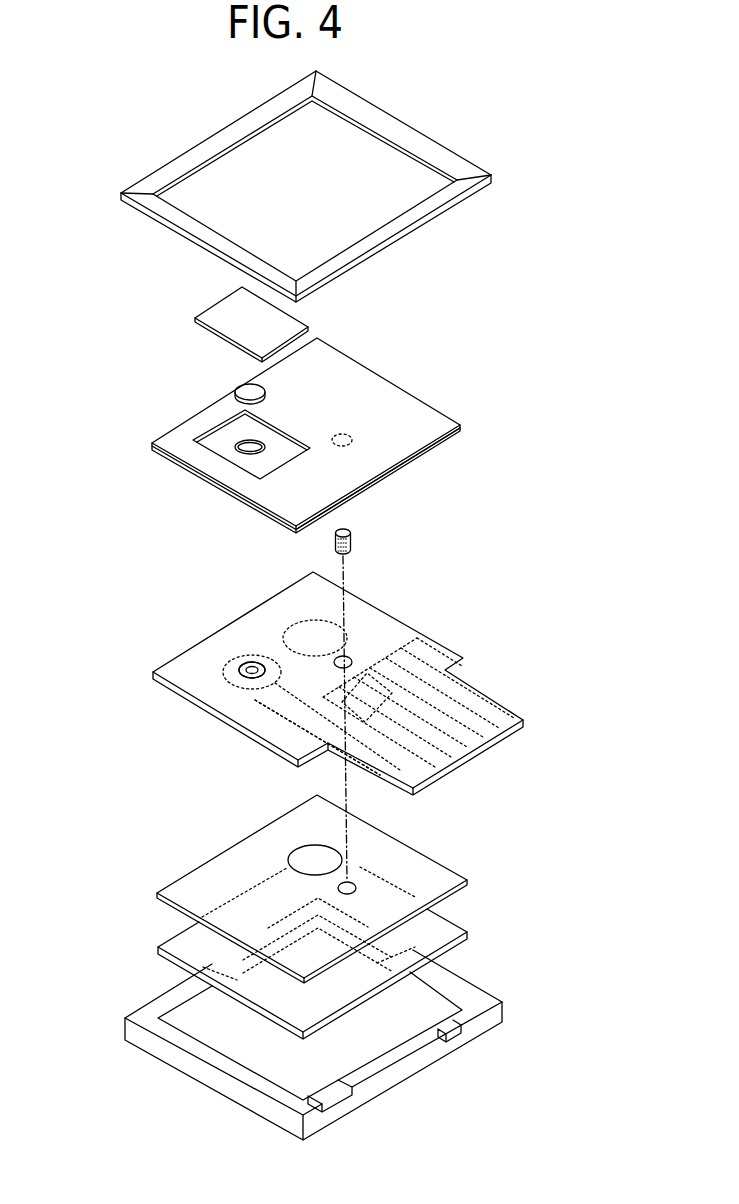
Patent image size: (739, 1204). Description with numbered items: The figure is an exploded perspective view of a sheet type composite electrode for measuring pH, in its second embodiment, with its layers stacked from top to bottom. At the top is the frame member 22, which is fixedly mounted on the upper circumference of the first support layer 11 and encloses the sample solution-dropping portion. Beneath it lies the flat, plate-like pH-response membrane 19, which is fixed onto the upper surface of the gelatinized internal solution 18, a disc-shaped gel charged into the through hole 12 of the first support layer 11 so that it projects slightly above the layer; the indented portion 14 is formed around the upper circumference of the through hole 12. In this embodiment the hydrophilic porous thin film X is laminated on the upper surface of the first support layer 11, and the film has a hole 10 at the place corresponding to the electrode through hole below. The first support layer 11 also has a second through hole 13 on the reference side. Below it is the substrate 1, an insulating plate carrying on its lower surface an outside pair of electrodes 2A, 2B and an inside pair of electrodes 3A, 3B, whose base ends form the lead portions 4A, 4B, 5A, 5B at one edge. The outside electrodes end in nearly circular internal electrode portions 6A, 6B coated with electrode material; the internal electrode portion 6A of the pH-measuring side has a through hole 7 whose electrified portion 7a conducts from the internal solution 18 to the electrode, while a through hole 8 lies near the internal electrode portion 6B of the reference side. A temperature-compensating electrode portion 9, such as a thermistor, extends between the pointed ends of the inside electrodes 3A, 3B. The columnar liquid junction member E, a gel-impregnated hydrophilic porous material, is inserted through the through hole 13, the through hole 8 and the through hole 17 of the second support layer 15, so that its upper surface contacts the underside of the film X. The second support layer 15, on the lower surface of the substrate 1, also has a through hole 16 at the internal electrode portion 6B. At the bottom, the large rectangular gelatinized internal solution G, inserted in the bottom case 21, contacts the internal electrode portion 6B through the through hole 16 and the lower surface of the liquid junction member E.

The frame member 22 is at (402, 117).
The pH-response membrane 19 is at (228, 305).
The hole 10 is at (198, 438).
The first support layer 11 is at (253, 510).
The indented portion 14 is at (219, 436).
The through hole 12 is at (247, 450).
The gelatinized internal solution 18 is at (242, 388).
The through hole 13 is at (350, 433).
The hydrophilic porous thin film X is at (355, 375).
The liquid junction member E is at (351, 540).
The substrate 1 is at (217, 718).
The through hole 7 is at (247, 668).
The electrified portion 7a is at (252, 663).
The internal electrode portion 6A is at (223, 670).
The electrode 2A is at (267, 720).
The through hole 8 is at (348, 655).
The internal electrode portion 6B is at (333, 600).
The temperature-compensating electrode portion 9 is at (395, 630).
The electrode 2B is at (413, 635).
The electrode 3A is at (437, 650).
The electrode 3B is at (475, 682).
The lead portion 4A is at (430, 785).
The lead portion 4B is at (513, 737).
The lead portion 5A is at (460, 767).
The lead portion 5B is at (488, 750).
The second support layer 15 is at (180, 877).
The through hole 16 is at (310, 862).
The through hole 17 is at (360, 885).
The gelatinized internal solution G is at (467, 943).
The bottom case 21 is at (417, 1077).